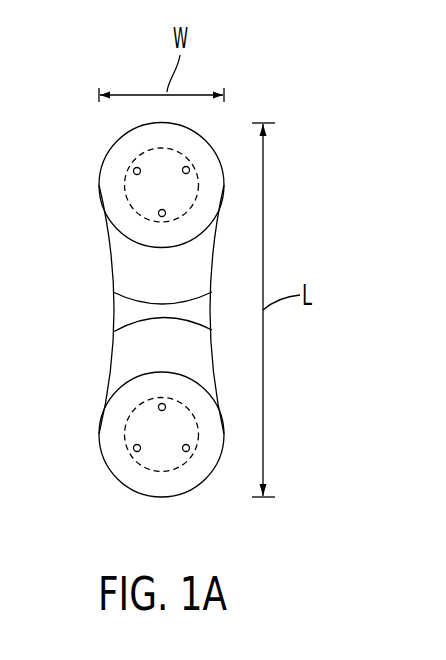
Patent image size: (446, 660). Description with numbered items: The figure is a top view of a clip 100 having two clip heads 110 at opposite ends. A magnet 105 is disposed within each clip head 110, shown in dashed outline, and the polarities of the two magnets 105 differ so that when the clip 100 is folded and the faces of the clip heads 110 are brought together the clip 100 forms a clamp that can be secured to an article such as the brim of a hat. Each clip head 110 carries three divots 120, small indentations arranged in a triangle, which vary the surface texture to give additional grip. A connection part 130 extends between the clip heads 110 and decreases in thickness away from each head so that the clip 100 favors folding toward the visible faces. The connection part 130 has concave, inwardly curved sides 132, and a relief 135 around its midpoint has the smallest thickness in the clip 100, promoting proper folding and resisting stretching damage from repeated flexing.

The clip 100 is at (200, 279).
The magnet 105 is at (126, 178).
The clip head 110 is at (112, 190).
The divot 120 is at (134, 168).
The connection part 130 is at (145, 309).
The concave, inwardly curved sides 132 is at (112, 355).
The relief 135 is at (123, 310).